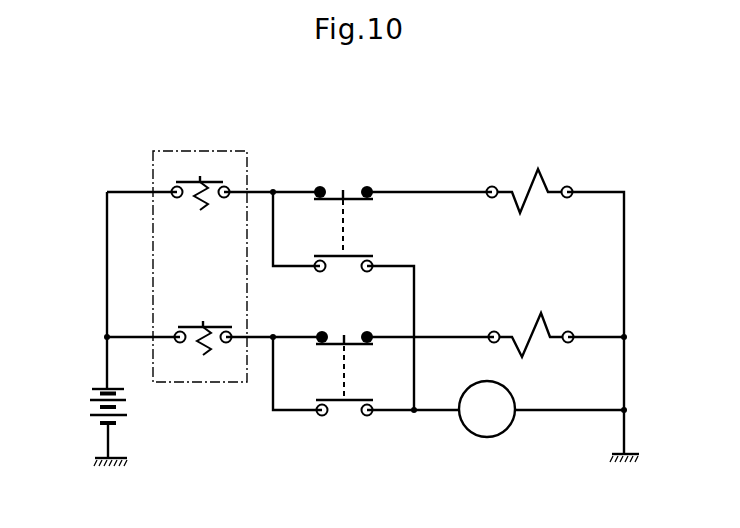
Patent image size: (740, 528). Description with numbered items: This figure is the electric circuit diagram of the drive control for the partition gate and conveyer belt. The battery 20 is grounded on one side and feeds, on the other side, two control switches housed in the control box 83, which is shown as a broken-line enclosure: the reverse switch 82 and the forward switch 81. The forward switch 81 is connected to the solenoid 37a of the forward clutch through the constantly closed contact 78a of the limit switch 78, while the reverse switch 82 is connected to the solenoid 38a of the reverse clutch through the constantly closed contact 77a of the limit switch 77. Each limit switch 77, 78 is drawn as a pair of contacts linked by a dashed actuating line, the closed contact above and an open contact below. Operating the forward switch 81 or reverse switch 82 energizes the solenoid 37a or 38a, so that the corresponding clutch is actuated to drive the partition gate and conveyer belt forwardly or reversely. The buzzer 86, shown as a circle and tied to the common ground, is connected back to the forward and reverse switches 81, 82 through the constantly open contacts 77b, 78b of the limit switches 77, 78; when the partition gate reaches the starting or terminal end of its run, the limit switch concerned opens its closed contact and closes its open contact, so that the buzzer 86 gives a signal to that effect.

The control box 83 is at (152, 163).
The reverse switch 82 is at (218, 180).
The forward switch 81 is at (213, 326).
The battery 20 is at (100, 386).
The limit switch 77 is at (344, 222).
The constantly closed contact 77a is at (350, 190).
The constantly open contact 77b is at (334, 266).
The limit switch 78 is at (344, 378).
The constantly closed contact 78a is at (351, 335).
The constantly open contact 78b is at (356, 404).
The solenoid 38a is at (549, 190).
The solenoid 37a is at (532, 332).
The buzzer 86 is at (512, 391).